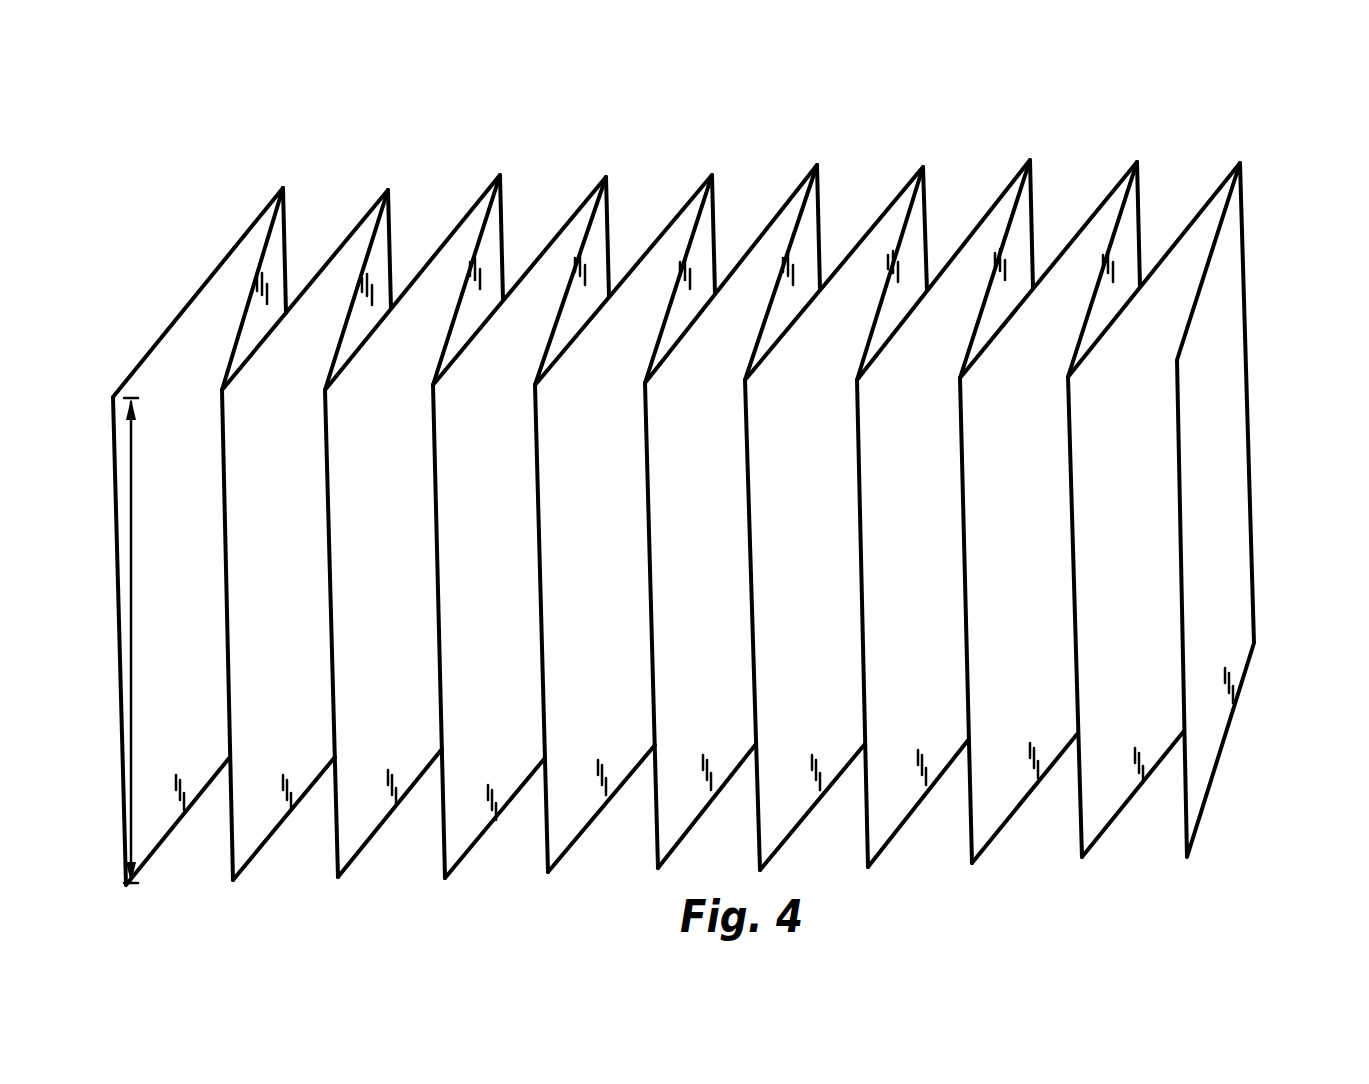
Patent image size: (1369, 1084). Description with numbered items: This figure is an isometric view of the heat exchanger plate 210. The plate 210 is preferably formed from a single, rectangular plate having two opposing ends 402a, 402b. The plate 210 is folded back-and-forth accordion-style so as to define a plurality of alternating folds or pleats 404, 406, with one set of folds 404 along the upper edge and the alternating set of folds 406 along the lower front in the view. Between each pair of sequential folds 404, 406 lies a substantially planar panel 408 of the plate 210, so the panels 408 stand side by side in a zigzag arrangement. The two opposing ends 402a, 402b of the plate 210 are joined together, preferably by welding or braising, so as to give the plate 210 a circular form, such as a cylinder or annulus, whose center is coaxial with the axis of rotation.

The heat exchanger plate 210 is at (716, 130).
The first opposing end 402a is at (112, 425).
The second opposing end 402b is at (1184, 563).
The fold 404 is at (500, 174).
The fold 406 is at (430, 385).
The planar panel 408 is at (210, 563).